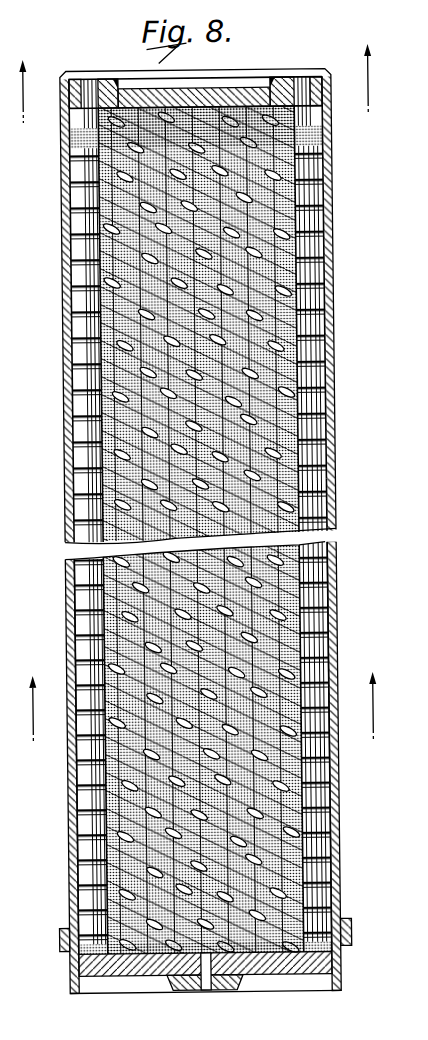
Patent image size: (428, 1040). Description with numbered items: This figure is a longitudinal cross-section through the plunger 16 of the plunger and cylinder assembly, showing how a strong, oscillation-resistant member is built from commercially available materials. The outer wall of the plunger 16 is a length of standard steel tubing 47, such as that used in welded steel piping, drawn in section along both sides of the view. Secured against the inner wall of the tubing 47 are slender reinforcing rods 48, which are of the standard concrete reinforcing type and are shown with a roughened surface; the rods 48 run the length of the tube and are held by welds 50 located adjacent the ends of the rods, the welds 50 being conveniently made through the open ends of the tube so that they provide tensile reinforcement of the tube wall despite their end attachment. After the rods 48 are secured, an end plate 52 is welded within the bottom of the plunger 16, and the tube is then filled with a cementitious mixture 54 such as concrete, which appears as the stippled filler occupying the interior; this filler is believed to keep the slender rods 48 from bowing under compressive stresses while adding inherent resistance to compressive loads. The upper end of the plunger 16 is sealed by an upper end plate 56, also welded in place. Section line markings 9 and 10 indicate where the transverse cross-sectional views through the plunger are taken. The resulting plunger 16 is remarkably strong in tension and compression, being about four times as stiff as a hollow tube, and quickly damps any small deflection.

The section line 9- 9 is at (79, 127).
The section line 10- 10 is at (77, 747).
The plunger 16 is at (338, 377).
The steel tubing 47 is at (334, 505).
The reinforcing rods 48 is at (83, 457).
The welds 50 is at (78, 222).
The end plate 52 is at (266, 965).
The cementitious mixture 54 is at (298, 236).
The upper end plate 56 is at (243, 88).